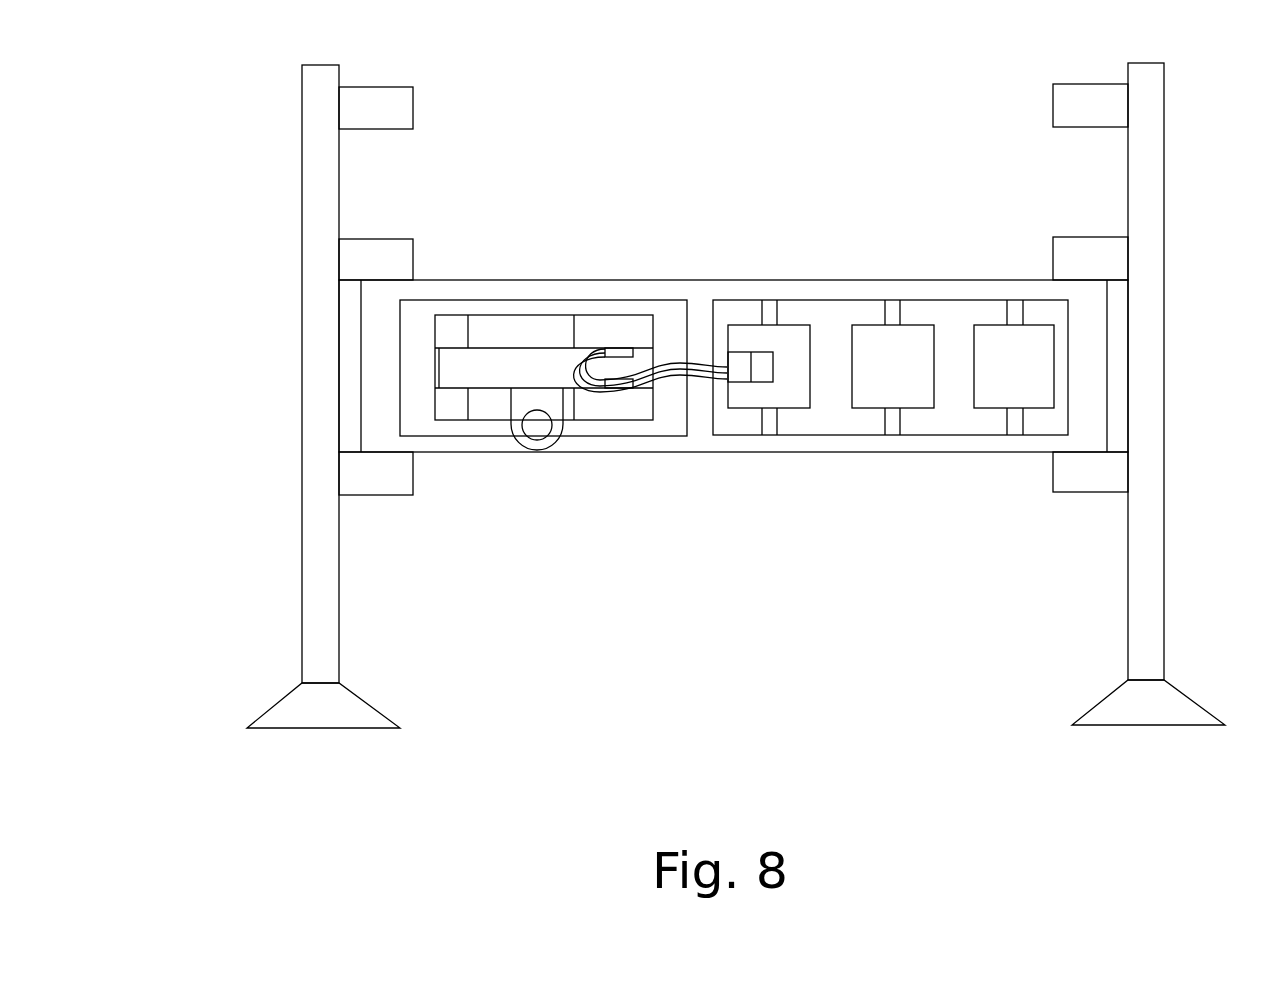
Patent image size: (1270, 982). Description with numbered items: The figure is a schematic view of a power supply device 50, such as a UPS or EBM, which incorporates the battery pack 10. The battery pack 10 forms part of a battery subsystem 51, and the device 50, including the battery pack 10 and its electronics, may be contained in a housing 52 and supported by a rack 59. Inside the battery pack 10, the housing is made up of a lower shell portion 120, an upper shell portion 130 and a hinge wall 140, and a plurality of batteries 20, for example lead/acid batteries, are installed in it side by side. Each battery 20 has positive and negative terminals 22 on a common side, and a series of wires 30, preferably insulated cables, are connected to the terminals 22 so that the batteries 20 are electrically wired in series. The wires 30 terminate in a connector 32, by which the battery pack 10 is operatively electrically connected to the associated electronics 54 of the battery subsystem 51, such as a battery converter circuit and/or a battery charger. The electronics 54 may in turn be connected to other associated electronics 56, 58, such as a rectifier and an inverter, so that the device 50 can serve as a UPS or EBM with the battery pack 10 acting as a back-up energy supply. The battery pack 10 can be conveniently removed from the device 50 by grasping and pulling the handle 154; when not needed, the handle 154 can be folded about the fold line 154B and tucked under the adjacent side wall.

The battery pack 10 is at (461, 351).
The batteries 20 is at (493, 360).
The terminals 22 is at (630, 347).
The wires 30 is at (693, 365).
The connector 32 is at (740, 372).
The power supply device 50 is at (752, 395).
The battery subsystem 51 is at (687, 475).
The housing 52 is at (890, 364).
The electronics 54 is at (784, 337).
The electronics 56 is at (915, 337).
The electronics 58 is at (1002, 385).
The rack 59 is at (1157, 573).
The lower shell portion 120 is at (444, 400).
The upper shell portion 130 is at (476, 330).
The hinge wall 140 is at (438, 358).
The handle 154 is at (528, 447).
The fold line 154B is at (537, 388).